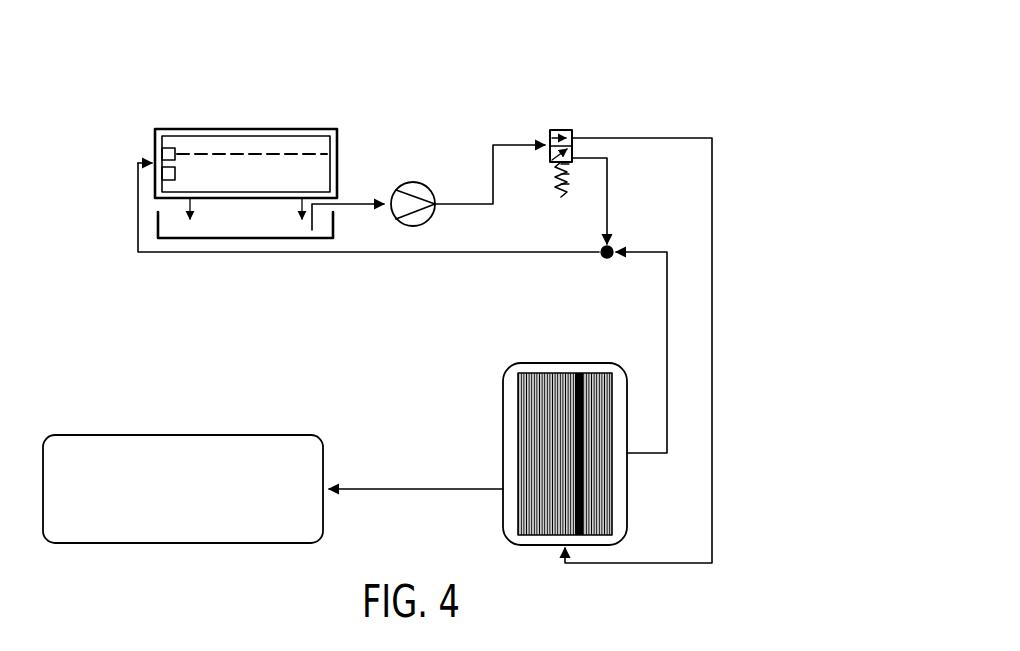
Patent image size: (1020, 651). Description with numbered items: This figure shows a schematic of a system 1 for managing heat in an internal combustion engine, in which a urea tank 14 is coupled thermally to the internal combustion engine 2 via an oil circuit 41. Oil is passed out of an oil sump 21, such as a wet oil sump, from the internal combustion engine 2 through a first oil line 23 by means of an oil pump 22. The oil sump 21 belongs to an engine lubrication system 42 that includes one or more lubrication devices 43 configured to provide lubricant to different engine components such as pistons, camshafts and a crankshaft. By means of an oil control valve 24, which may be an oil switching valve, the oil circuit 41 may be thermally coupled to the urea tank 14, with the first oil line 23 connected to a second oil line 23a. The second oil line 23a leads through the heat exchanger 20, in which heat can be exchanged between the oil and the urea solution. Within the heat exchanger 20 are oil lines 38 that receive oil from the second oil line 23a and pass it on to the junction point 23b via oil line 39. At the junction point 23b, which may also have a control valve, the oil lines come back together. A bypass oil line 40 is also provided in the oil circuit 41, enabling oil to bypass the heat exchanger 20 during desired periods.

The system 1 is at (742, 102).
The internal combustion engine 2 is at (247, 129).
The urea tank 14 is at (478, 420).
The heat exchanger 20 is at (520, 510).
The oil sump 21 is at (247, 237).
The oil pump 22 is at (430, 219).
The first oil line 23 is at (345, 203).
The second oil line 23a is at (712, 333).
The junction point 23b is at (616, 243).
The oil control valve 24 is at (561, 130).
The oil lines 38 is at (520, 428).
The oil line 39 is at (667, 293).
The bypass oil line 40 is at (609, 175).
The oil circuit 41 is at (764, 210).
The engine lubrication system 42 is at (111, 158).
The lubrication devices 43 is at (177, 173).